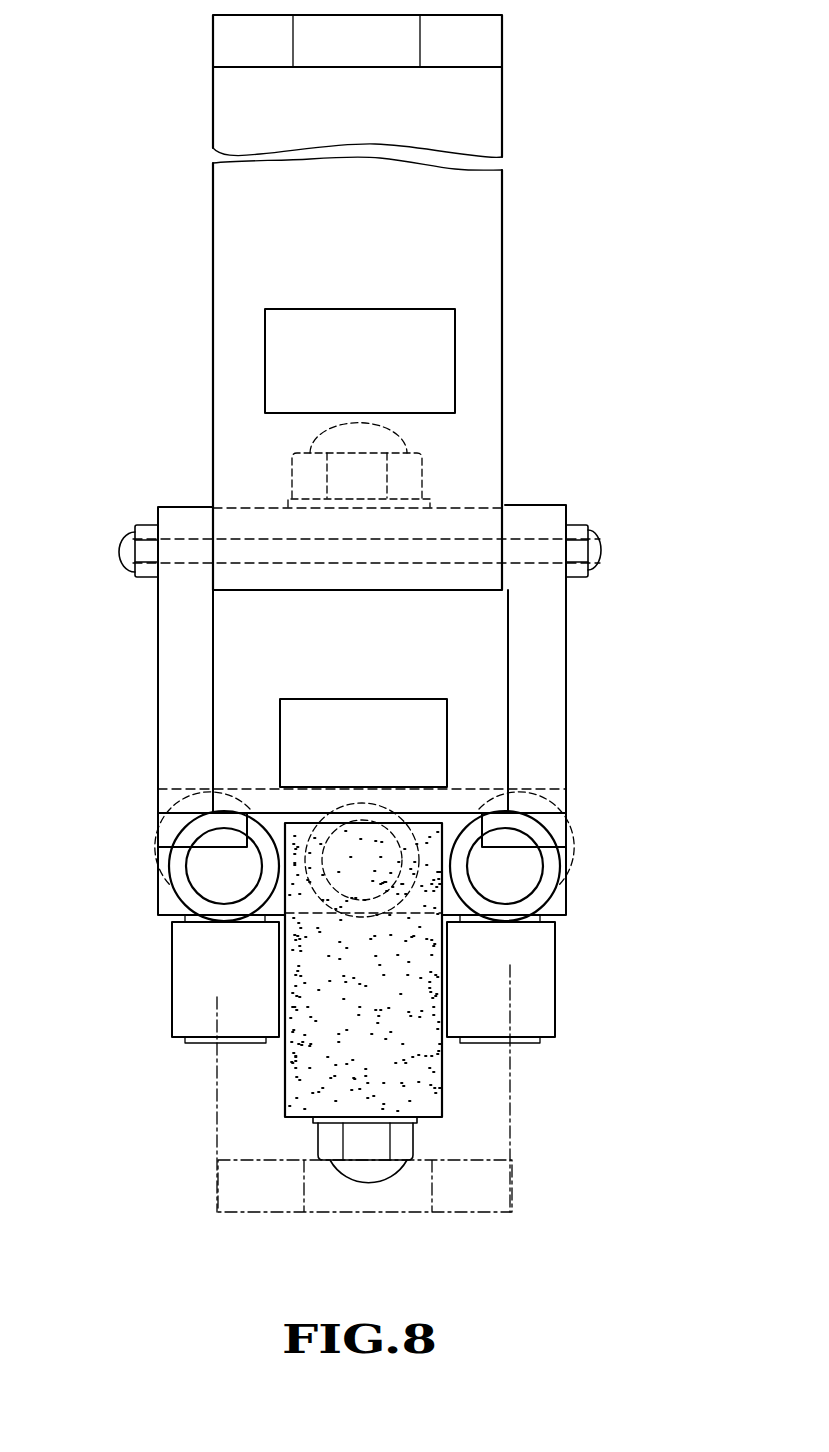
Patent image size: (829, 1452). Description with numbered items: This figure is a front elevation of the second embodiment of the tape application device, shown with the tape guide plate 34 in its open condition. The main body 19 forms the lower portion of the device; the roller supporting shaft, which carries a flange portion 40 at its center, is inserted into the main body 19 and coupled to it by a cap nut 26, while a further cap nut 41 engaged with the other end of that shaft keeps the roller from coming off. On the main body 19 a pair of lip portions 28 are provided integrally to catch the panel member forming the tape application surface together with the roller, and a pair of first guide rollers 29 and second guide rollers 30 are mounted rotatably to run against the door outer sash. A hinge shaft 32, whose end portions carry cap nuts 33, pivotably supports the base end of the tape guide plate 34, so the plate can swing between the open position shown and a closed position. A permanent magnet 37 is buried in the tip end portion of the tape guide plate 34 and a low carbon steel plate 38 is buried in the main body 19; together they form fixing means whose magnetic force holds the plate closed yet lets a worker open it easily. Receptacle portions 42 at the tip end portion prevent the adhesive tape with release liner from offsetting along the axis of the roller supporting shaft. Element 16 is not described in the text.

The pad block 16 is at (415, 1065).
The main body 19 is at (560, 703).
The cap nut 26 is at (408, 473).
The lip portions 28 is at (178, 828).
The first guide rollers 29 is at (188, 982).
The second guide rollers 30 is at (313, 822).
The hinge shaft 32 is at (268, 548).
The cap nuts 33 is at (118, 550).
The tape guide plate 34 is at (240, 203).
The permanent magnet 37 is at (440, 341).
The low carbon steel plate 38 is at (323, 705).
The flange portion 40 is at (408, 815).
The cap nut 41 is at (370, 1175).
The receptacle portions 42 is at (482, 40).